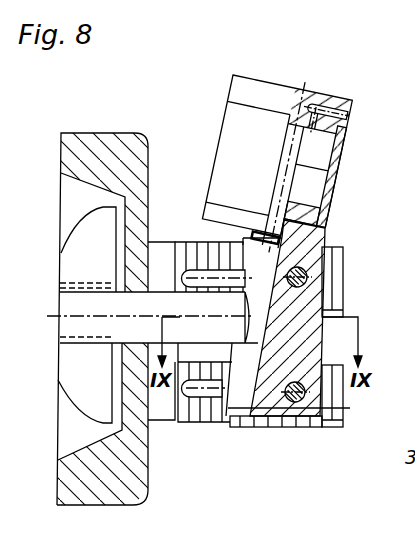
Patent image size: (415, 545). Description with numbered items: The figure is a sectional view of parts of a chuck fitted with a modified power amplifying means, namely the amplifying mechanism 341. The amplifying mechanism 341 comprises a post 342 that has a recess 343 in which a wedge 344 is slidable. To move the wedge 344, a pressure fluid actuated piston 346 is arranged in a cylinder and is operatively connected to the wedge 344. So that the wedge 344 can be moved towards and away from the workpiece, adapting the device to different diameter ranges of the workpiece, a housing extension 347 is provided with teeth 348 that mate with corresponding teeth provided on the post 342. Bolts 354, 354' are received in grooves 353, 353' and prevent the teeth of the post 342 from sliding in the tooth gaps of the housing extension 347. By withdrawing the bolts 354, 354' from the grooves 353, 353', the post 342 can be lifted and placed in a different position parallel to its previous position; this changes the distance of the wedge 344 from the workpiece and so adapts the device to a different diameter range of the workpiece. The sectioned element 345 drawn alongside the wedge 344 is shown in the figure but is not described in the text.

The amplifying mechanism 341 is at (194, 131).
The post 342 is at (300, 398).
The recess 343 is at (240, 395).
The wedge 344 is at (322, 223).
The side wall of body 345 is at (340, 170).
The pressure fluid actuated piston 346 is at (312, 150).
The housing extension 347 is at (170, 240).
The teeth 348 is at (210, 263).
The groove 353 is at (295, 288).
The groove 353' is at (189, 426).
The bolt 354 is at (345, 269).
The bolt 354' is at (326, 427).